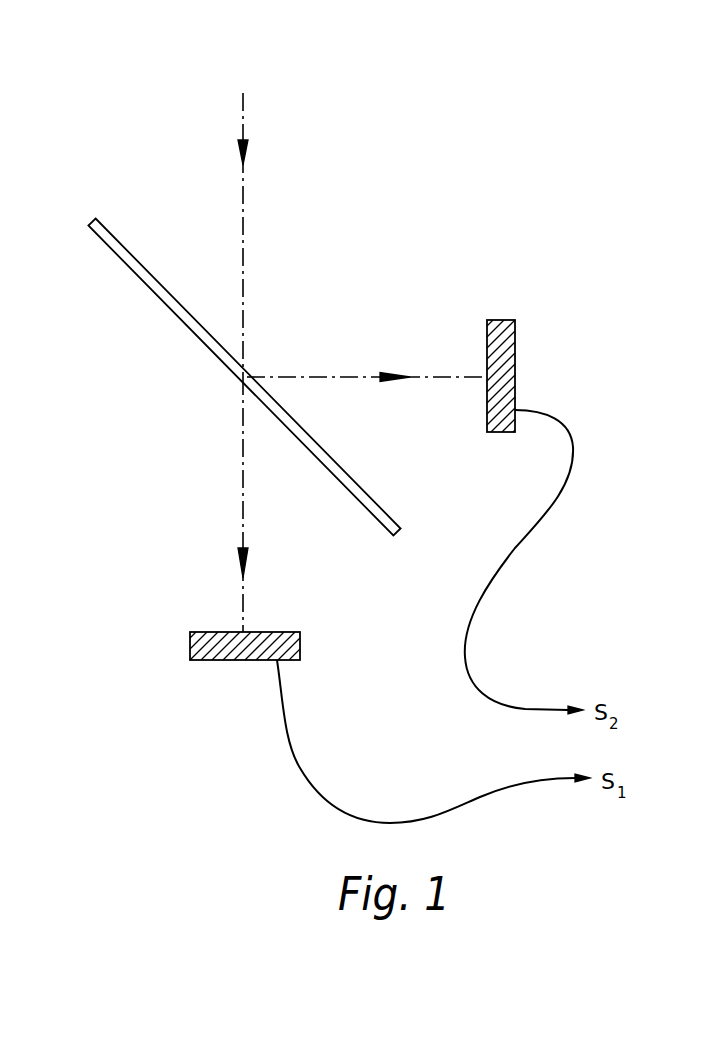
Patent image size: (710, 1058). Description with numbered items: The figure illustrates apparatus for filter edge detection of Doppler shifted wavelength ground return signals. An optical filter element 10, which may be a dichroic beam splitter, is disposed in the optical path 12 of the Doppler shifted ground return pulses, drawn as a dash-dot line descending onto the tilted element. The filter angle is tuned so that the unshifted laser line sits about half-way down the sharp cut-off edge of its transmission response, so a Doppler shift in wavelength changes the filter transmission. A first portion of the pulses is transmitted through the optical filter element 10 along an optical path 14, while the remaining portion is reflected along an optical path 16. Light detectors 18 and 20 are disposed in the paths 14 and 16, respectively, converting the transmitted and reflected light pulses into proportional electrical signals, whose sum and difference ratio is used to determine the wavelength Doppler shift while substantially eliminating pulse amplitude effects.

The optical filter element 10 is at (150, 293).
The optical path 12 is at (243, 205).
The optical path 14 is at (243, 507).
The optical path 16 is at (332, 377).
The light detector 18 is at (207, 660).
The light detector 20 is at (497, 320).